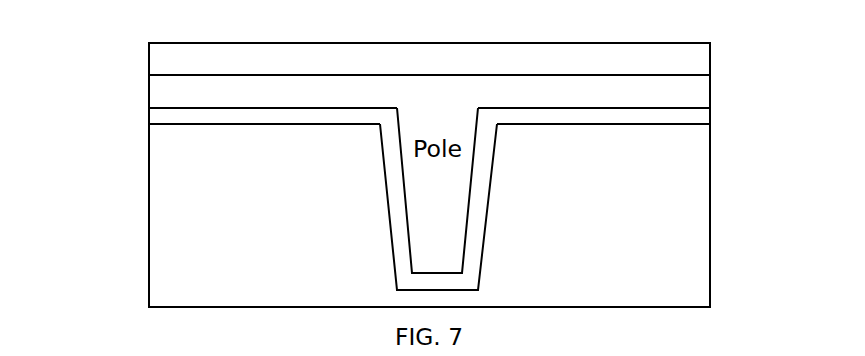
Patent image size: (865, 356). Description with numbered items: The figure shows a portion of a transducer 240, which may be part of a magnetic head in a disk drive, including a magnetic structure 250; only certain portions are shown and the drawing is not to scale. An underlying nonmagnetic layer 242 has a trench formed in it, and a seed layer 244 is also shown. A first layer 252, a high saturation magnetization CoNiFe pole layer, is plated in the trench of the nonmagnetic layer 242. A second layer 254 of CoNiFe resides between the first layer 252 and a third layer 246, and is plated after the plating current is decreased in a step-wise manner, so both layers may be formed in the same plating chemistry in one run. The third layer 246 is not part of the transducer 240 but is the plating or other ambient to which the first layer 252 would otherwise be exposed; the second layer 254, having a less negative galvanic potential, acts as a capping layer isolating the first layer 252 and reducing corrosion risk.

The transducer 240 is at (53, 54).
The nonmagnetic layer 242 is at (710, 257).
The seed layer 244 is at (150, 117).
The third layer 246 is at (724, 19).
The magnetic structure 250 is at (806, 76).
The first layer 252 is at (147, 92).
The second layer 254 is at (712, 53).